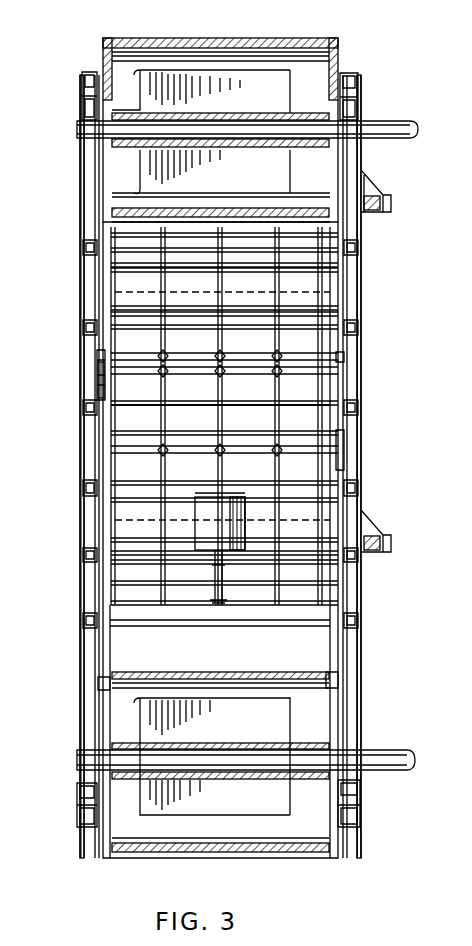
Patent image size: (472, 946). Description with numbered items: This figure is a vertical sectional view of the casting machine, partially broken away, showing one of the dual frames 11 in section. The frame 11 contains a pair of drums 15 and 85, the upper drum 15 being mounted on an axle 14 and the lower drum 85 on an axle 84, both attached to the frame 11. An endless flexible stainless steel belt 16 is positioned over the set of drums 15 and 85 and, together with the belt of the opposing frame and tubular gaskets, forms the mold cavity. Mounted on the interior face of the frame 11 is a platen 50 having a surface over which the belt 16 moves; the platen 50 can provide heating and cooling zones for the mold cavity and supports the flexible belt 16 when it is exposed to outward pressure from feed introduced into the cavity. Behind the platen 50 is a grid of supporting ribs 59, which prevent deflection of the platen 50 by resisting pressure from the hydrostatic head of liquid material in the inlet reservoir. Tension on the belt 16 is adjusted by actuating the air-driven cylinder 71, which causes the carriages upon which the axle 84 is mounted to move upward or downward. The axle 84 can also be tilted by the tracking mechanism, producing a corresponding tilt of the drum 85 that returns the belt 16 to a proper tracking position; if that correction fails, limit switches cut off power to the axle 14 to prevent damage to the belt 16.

The frame 11 is at (353, 443).
The axle 14 is at (419, 130).
The drum 15 is at (309, 73).
The endless flexible stainless steel belt 16 is at (269, 39).
The platen 50 is at (331, 393).
The supporting rib 59 is at (127, 411).
The air-driven cylinder 71 is at (215, 528).
The axle 84 is at (385, 754).
The drum 85 is at (310, 706).